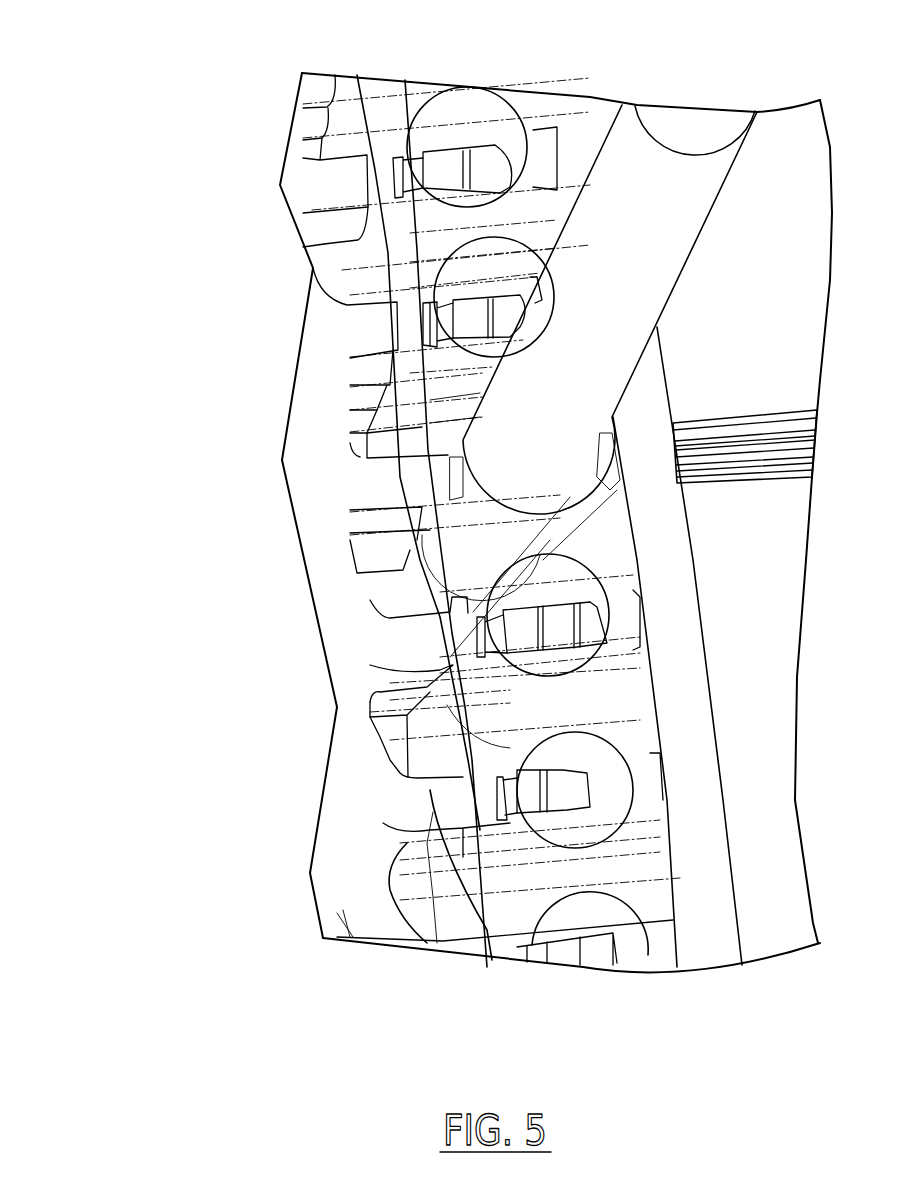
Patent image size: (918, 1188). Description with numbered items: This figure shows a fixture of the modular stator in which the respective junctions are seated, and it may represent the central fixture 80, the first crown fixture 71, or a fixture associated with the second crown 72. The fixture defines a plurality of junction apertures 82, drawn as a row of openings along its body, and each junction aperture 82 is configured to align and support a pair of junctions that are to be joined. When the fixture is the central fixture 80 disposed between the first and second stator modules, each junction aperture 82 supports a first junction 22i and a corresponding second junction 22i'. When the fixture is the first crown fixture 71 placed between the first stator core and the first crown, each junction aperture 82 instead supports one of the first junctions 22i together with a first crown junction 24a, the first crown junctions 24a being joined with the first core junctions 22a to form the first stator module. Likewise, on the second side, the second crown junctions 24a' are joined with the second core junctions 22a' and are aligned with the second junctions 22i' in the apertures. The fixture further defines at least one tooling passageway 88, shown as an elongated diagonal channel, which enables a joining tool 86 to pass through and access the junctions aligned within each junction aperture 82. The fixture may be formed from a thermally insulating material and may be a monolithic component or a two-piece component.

The first core junctions 22a is at (380, 513).
The second core junctions 22a' is at (395, 513).
The first junctions 22i is at (394, 513).
The first crown junctions 24a is at (266, 732).
The second crown junctions 24a' is at (280, 732).
The second junctions 22i' is at (323, 732).
The junction apertures 82 is at (485, 965).
The joining tool 86 is at (672, 257).
The tooling passageway 88 is at (548, 240).
The first crown fixture 71 is at (652, 900).
The second crown 72 is at (699, 673).
The central fixture 80 is at (745, 715).